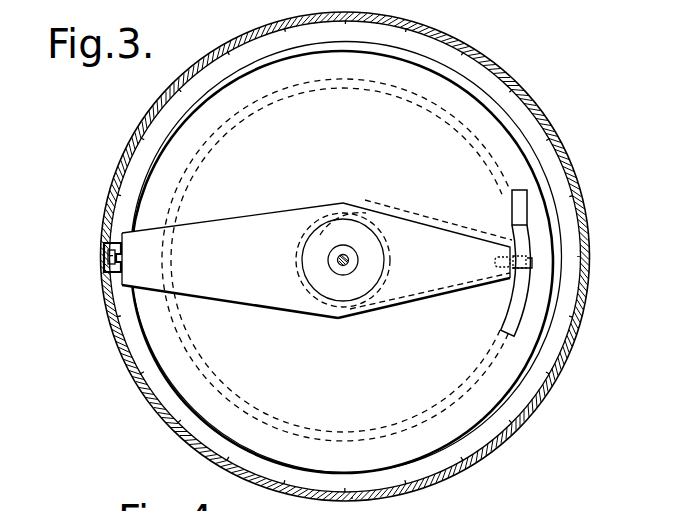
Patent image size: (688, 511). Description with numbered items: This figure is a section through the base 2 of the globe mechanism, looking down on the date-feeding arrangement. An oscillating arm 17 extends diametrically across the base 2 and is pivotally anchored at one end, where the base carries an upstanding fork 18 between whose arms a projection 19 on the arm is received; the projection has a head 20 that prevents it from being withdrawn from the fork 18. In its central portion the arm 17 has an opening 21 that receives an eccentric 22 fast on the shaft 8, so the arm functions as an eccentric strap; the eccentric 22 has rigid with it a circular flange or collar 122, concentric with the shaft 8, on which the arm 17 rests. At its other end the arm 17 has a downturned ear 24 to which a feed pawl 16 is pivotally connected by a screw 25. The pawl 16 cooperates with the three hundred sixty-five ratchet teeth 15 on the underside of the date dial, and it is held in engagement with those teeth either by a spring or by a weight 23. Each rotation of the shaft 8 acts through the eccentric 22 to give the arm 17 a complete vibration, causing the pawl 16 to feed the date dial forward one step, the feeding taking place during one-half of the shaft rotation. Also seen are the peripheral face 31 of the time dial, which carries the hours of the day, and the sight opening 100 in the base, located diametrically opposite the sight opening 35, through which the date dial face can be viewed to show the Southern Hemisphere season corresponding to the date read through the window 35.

The sight opening 100 is at (370, 19).
The peripheral face 31 is at (546, 405).
The base 2 is at (567, 377).
The projection 19 is at (124, 252).
The oscillating arm 17 is at (450, 277).
The ratchet teeth 15 is at (487, 350).
The feed pawl 16 is at (522, 293).
The weight 23 is at (527, 197).
The downturned ear 24 is at (511, 251).
The screw 25 is at (532, 262).
The upstanding fork 18 is at (110, 283).
The head 20 is at (105, 258).
The opening 21 is at (318, 228).
The circular flange or collar 122 is at (363, 212).
The eccentric 22 is at (322, 285).
The shaft 8 is at (342, 266).
The sight opening 35 is at (352, 497).